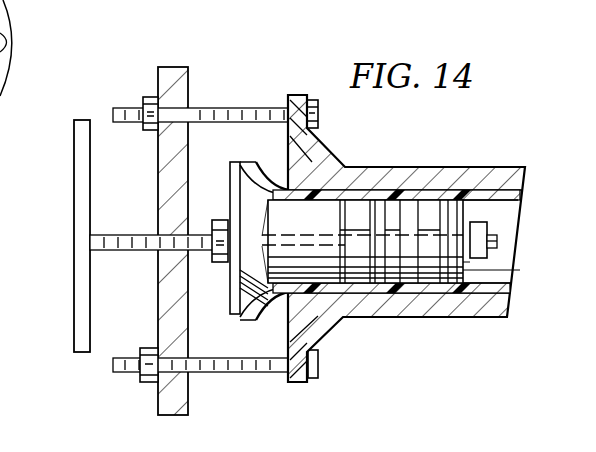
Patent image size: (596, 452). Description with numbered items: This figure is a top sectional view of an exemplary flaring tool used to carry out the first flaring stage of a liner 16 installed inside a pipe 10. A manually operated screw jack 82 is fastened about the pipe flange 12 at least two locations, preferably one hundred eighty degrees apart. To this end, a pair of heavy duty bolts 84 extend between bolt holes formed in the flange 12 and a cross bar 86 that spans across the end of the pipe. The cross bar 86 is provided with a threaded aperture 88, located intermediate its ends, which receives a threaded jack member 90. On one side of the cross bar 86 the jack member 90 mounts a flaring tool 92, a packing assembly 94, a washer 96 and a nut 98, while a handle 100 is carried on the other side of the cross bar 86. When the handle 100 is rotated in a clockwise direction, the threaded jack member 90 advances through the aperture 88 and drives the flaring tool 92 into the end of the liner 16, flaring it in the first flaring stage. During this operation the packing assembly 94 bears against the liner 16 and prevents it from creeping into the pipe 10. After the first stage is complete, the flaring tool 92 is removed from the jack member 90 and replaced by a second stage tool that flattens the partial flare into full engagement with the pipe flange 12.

The pipe 10 is at (405, 167).
The pipe flange 12 is at (294, 97).
The liner 16 is at (455, 190).
The screw jack 82 is at (201, 92).
The heavy duty bolts 84 is at (236, 108).
The cross bar 86 is at (160, 160).
The threaded aperture 88 is at (160, 240).
The threaded jack member 90 is at (125, 252).
The flaring tool 92 is at (228, 290).
The packing assembly 94 is at (395, 318).
The washer 96 is at (470, 214).
The nut 98 is at (497, 245).
The handle 100 is at (74, 295).